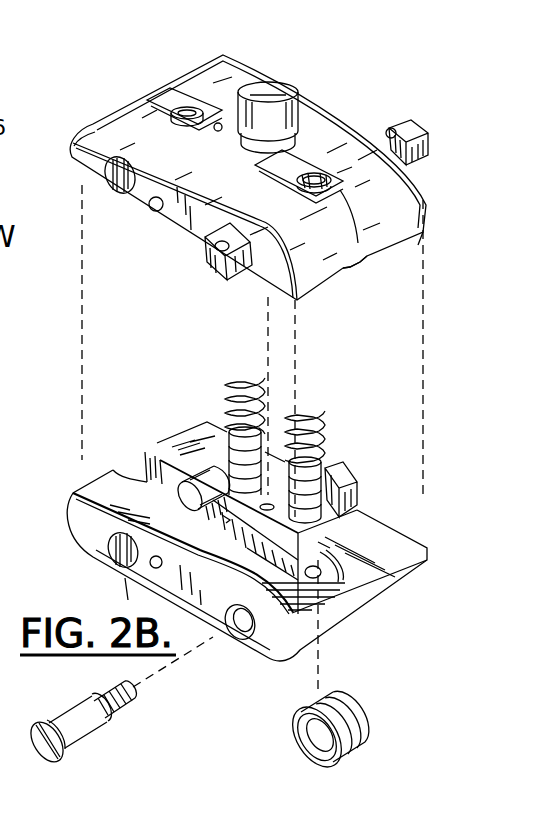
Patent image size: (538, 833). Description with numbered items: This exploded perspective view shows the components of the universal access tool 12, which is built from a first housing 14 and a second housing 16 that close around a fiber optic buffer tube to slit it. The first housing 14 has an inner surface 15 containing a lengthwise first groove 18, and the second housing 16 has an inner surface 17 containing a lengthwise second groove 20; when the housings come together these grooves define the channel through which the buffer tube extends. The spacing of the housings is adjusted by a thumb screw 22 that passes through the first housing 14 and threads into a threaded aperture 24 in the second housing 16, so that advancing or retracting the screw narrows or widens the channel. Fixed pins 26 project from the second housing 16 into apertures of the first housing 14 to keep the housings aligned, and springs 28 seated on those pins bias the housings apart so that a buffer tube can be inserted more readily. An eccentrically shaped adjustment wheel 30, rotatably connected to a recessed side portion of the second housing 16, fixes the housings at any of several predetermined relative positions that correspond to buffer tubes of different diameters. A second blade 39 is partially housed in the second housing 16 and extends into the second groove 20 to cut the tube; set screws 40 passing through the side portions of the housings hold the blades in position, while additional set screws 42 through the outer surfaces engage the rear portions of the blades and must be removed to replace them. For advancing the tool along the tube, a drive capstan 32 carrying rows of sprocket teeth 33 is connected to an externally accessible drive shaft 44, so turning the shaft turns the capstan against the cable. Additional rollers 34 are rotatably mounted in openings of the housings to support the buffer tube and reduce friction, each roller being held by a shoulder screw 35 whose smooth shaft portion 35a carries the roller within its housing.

The universal access tool 12 is at (427, 299).
The first housing 14 is at (220, 70).
The inner surface 15 is at (420, 243).
The second housing 16 is at (397, 573).
The inner surface 17 is at (403, 543).
The first groove 18 is at (365, 257).
The second groove 20 is at (157, 453).
The thumb screw 22 is at (288, 90).
The threaded aperture 24 is at (313, 517).
The fixed pins 26 is at (238, 433).
The springs 28 is at (228, 377).
The adjustment wheel 30 is at (342, 480).
The drive capstan 32 is at (312, 178).
The sprockets or teeth 33 is at (317, 193).
The additional rollers 34 is at (188, 110).
The shoulder screws 35 is at (110, 173).
The smooth shaft portion 35a is at (73, 715).
The second blade 39 is at (222, 517).
The set screws 40 is at (155, 212).
The additional set screws 42 is at (218, 131).
The drive shaft 44 is at (417, 140).